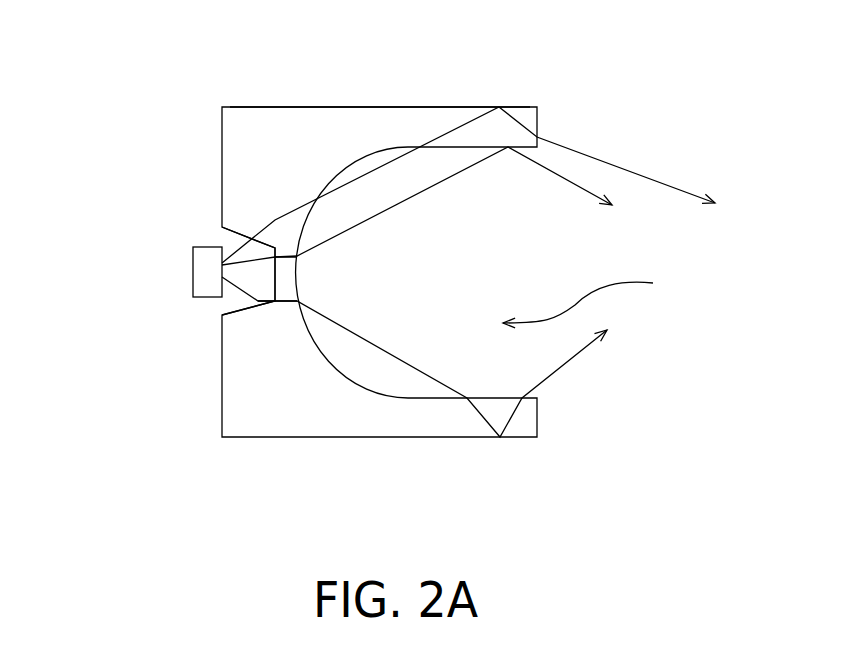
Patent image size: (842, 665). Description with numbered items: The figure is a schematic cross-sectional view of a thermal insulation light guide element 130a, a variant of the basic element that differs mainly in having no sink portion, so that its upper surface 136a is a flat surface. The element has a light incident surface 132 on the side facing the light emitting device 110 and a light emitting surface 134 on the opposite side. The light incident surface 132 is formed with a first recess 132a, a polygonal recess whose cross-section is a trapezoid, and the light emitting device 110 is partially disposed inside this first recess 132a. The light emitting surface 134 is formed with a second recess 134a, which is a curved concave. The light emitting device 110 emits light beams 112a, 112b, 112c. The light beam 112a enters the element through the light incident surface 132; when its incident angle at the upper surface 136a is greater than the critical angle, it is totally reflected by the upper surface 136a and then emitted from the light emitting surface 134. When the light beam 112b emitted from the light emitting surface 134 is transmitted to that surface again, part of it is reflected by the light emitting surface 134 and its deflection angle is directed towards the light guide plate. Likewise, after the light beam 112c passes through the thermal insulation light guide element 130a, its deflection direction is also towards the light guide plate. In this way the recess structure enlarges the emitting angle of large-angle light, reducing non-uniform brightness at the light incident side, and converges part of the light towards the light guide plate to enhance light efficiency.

The light emitting device 110 is at (198, 270).
The light beam 112a is at (655, 177).
The light beam 112b is at (423, 192).
The light beam 112c is at (568, 363).
The thermal insulation light guide element 130a is at (652, 517).
The light incident surface 132 is at (218, 172).
The first recess 132a is at (217, 312).
The light emitting surface 134 is at (298, 280).
The second recess 134a is at (603, 299).
The upper surface 136a is at (330, 105).